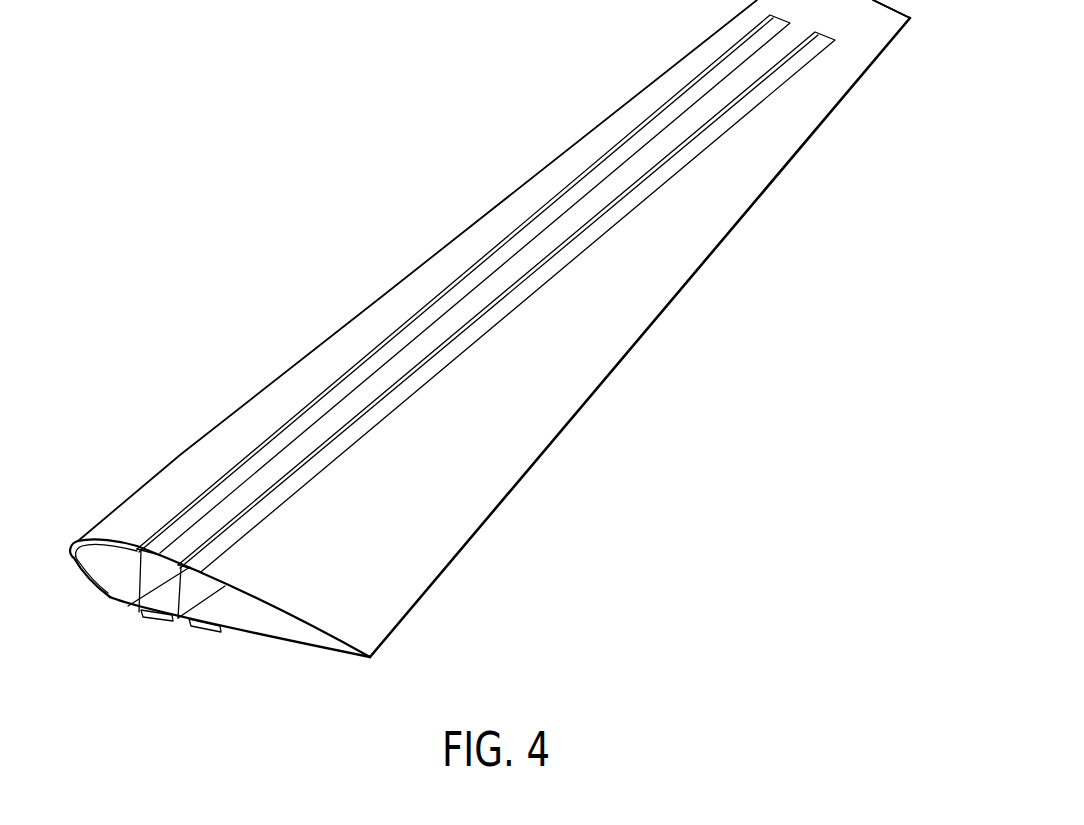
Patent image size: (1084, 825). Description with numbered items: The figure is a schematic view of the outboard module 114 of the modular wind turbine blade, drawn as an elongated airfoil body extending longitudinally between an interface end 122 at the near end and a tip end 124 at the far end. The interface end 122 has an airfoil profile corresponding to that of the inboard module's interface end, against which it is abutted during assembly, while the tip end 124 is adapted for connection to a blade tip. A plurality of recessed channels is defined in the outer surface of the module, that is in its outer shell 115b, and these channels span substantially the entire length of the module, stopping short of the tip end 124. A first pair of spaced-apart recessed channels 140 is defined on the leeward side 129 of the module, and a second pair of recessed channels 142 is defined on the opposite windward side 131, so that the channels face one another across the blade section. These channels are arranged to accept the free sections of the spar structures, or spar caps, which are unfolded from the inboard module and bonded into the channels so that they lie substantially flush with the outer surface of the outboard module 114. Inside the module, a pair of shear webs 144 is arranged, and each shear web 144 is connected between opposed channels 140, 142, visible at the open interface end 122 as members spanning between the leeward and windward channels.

The outboard module 114 is at (423, 263).
The outer shell 115b is at (649, 330).
The interface end 122 is at (287, 641).
The tip end 124 is at (899, 64).
The leeward side 129 is at (529, 416).
The windward side 131 is at (533, 484).
The recessed channels 140 is at (243, 470).
The recessed channels 142 is at (141, 612).
The shear webs 144 is at (150, 582).